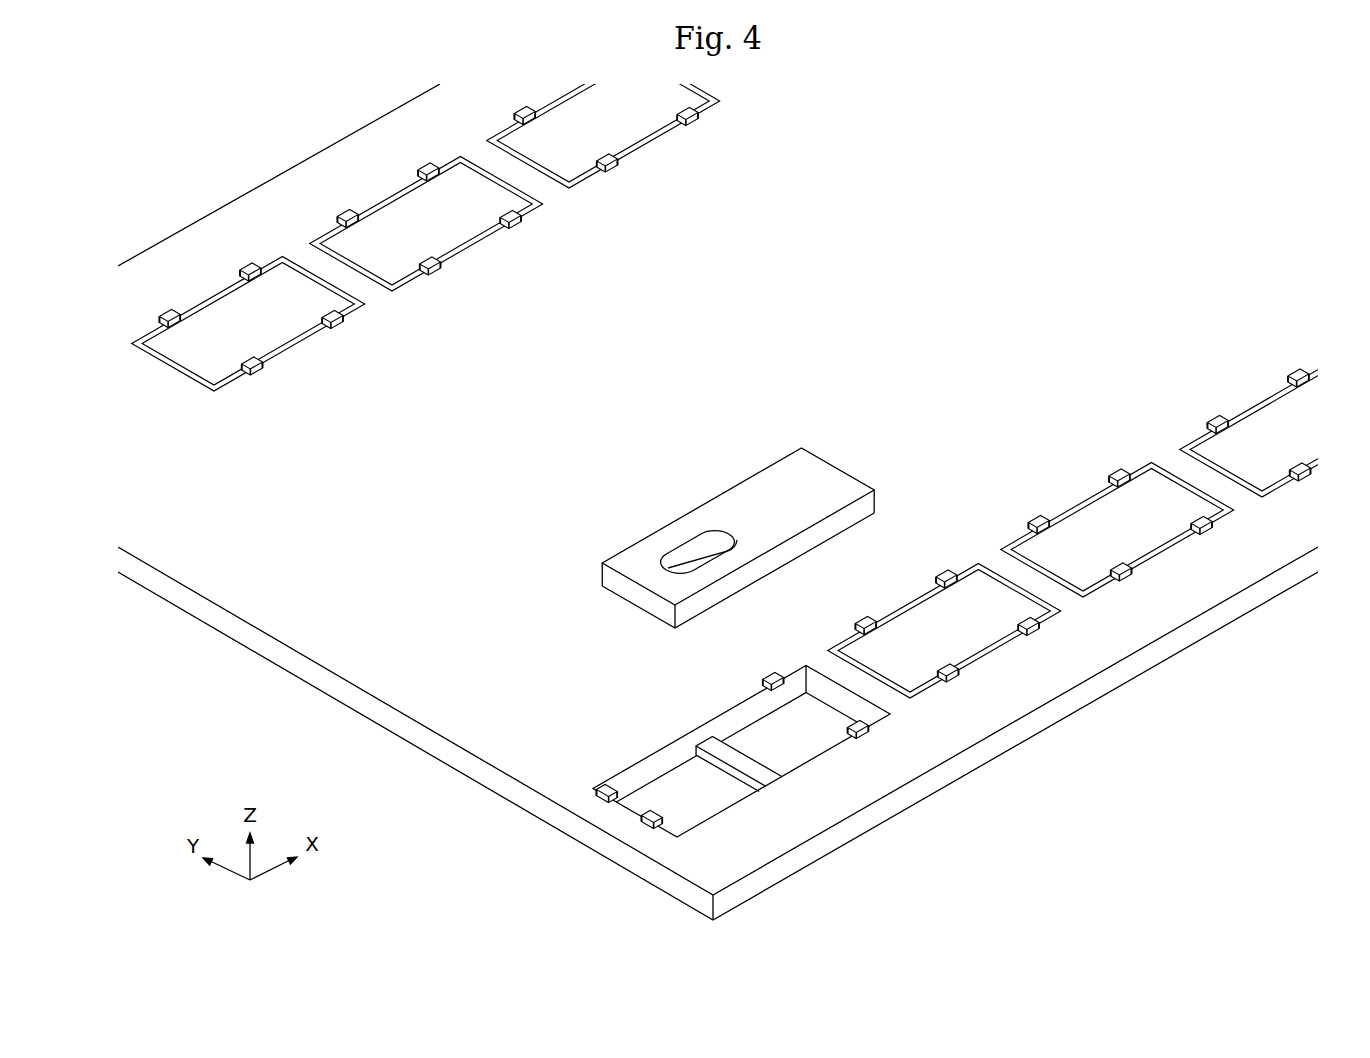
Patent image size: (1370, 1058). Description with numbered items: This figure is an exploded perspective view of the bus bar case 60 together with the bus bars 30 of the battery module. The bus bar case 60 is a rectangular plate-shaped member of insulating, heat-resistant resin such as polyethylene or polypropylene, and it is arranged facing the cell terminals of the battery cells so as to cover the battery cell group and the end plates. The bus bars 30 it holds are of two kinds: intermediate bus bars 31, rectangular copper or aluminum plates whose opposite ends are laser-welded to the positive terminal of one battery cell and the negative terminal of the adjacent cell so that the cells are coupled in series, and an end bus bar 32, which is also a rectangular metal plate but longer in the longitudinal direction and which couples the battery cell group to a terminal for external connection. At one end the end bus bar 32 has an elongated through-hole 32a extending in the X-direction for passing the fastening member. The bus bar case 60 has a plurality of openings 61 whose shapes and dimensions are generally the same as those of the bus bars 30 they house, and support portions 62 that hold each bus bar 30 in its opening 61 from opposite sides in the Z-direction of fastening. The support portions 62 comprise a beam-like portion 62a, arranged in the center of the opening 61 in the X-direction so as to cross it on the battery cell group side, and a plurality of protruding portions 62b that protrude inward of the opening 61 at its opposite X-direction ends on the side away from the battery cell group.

The bus bar 30 is at (746, 374).
The intermediate bus bar 31 is at (398, 223).
The end bus bar 32 is at (738, 512).
The elongated through-hole 32a is at (675, 560).
The bus bar case 60 is at (451, 771).
The opening 61 is at (645, 773).
The support portion 62 is at (682, 745).
The beam-like portion 62a is at (740, 762).
The protruding portion 62b is at (853, 727).